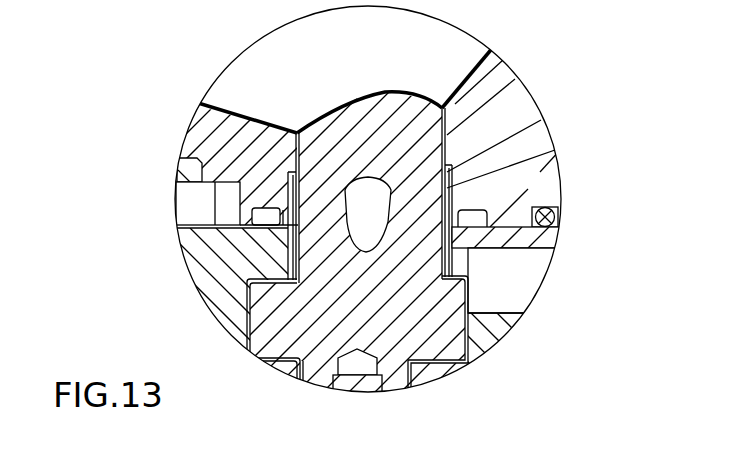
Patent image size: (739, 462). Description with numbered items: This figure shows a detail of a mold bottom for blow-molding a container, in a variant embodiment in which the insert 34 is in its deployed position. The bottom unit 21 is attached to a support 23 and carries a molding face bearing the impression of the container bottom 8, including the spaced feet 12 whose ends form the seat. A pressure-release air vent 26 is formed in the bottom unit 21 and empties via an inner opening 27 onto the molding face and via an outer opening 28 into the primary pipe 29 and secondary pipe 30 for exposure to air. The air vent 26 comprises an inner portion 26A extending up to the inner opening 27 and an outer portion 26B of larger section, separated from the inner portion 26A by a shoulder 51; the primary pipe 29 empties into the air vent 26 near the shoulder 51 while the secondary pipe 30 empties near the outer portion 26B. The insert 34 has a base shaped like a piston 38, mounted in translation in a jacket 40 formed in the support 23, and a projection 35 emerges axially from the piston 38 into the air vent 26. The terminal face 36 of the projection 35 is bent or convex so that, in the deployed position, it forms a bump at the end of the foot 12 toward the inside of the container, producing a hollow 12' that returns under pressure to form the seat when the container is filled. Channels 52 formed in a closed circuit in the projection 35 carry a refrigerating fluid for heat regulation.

The bottom 8 is at (458, 89).
The foot 12 is at (241, 105).
The hollow 12' is at (369, 92).
The bottom unit 21 is at (195, 137).
The support 23 is at (211, 281).
The pressure-release air vent 26 is at (190, 163).
The inner portion 26A is at (292, 129).
The outer portion 26B is at (283, 183).
The inner opening 27 is at (294, 156).
The outer opening 28 is at (452, 203).
The primary pipe 29 is at (527, 142).
The secondary pipe 30 is at (510, 281).
The insert 34 is at (470, 347).
The projection 35 is at (341, 177).
The terminal face 36 is at (342, 116).
The piston 38 is at (260, 348).
The jacket 40 is at (246, 326).
The shoulder 51 is at (451, 161).
The channels 52 is at (380, 220).